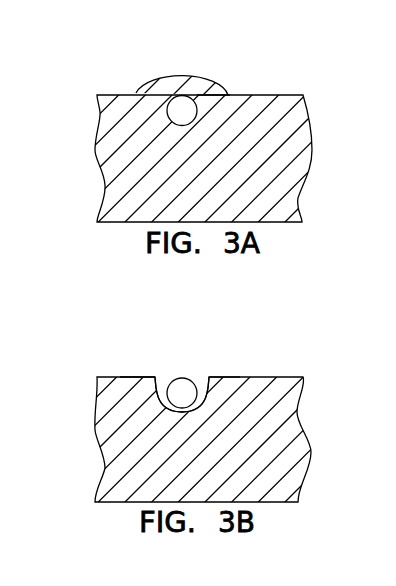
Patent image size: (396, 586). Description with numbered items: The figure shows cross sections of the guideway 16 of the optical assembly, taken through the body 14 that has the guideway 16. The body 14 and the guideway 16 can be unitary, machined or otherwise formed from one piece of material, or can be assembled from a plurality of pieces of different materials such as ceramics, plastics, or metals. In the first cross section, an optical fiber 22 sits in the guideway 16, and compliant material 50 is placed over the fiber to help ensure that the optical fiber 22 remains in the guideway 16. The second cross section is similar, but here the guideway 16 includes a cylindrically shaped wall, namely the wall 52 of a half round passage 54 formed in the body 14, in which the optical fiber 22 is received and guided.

In FIG. 3A, the body 14 is at (299, 174).
In FIG. 3B, the body 14 is at (284, 434).
In FIG. 3A, the guideway 16 is at (200, 96).
In FIG. 3B, the guideway 16 is at (199, 377).
In FIG. 3A, the optical fiber 22 is at (180, 113).
In FIG. 3B, the optical fiber 22 is at (182, 393).
In FIG. 3A, the compliant material 50 is at (202, 90).
In FIG. 3B, the wall 52 is at (156, 378).
In FIG. 3B, the half round passage 54 is at (201, 407).